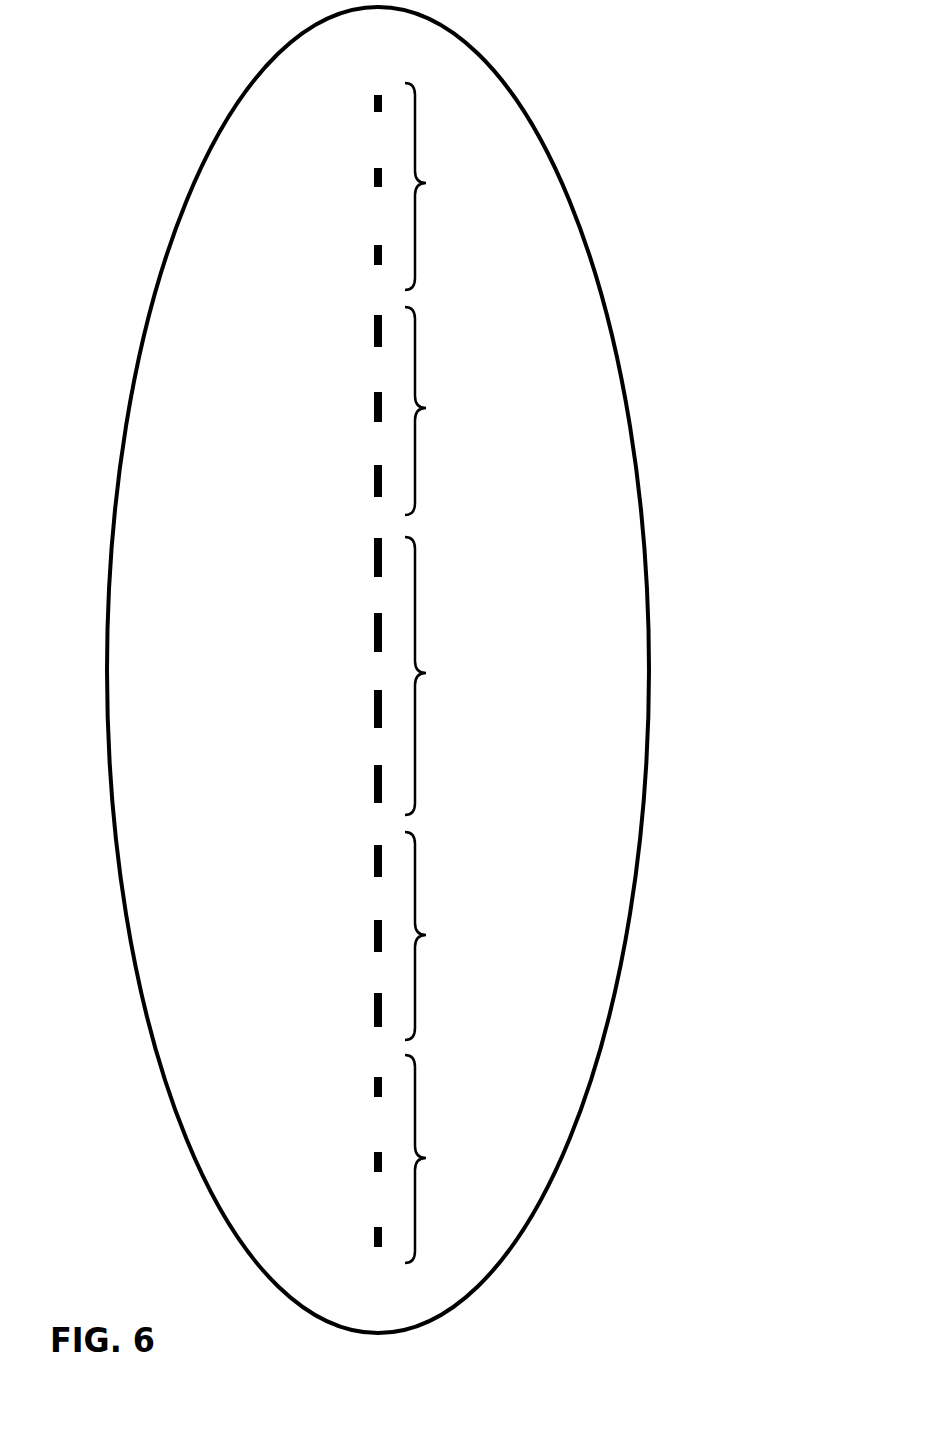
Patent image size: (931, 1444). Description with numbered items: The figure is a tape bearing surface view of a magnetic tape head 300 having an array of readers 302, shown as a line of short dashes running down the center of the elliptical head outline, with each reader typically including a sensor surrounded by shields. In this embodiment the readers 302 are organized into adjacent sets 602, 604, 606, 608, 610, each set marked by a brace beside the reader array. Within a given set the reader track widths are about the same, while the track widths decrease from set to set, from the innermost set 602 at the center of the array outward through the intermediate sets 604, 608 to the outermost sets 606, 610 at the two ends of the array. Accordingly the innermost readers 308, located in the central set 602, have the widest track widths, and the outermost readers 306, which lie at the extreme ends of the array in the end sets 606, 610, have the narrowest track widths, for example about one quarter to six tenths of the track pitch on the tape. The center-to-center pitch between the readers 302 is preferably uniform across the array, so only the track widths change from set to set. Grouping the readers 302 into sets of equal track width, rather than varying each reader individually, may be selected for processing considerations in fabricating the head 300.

The magnetic tape head 300 is at (200, 163).
The readers 302 is at (228, 632).
The outermost readers 306 is at (375, 107).
The innermost readers 308 is at (373, 703).
The innermost set of readers 602 is at (484, 687).
The set of readers 604 is at (482, 423).
The outermost set of readers 606 is at (482, 198).
The set of readers 608 is at (482, 950).
The outermost set of readers 610 is at (482, 1173).